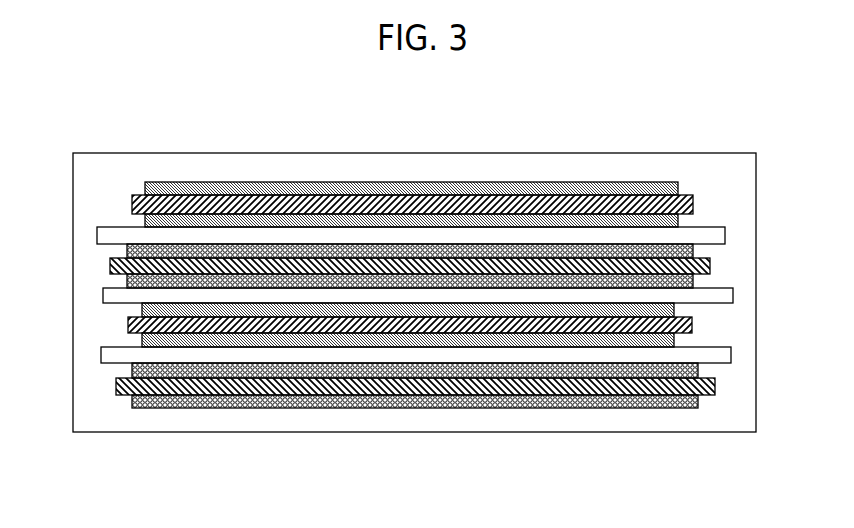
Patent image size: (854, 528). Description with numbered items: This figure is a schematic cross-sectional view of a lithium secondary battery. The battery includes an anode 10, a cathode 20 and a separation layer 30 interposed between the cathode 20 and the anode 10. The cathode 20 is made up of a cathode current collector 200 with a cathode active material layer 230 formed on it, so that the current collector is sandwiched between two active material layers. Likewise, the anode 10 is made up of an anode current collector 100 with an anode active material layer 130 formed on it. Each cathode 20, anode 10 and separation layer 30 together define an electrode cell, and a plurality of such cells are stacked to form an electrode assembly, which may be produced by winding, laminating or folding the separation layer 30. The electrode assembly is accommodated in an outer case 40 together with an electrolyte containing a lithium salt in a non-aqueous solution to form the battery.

The anode 10 is at (479, 322).
The cathode 20 is at (484, 259).
The separation layer 30 is at (97, 237).
The outer case 40 is at (205, 432).
The anode current collector 100 is at (710, 266).
The anode active material layer 130 is at (693, 251).
The cathode current collector 200 is at (693, 204).
The cathode active material layer 230 is at (678, 189).